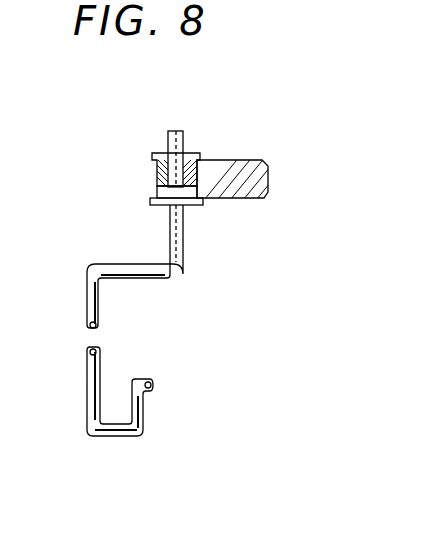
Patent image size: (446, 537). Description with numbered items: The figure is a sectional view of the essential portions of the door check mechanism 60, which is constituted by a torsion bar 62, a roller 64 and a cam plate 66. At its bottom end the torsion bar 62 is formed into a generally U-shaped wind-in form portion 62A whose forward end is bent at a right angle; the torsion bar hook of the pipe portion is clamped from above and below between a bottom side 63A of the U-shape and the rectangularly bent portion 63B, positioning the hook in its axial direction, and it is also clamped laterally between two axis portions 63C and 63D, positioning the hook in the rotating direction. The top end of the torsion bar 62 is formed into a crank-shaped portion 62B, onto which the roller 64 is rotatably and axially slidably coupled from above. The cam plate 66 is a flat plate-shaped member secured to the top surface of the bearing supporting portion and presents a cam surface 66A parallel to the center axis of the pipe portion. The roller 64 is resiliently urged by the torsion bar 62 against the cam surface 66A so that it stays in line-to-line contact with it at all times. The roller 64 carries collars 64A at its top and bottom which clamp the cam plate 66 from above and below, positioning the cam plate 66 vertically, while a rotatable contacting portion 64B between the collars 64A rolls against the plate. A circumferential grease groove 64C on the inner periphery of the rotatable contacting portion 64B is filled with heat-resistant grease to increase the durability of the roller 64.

The door check mechanism 60 is at (263, 220).
The torsion bar 62 is at (144, 266).
The U-shaped wind-in form portion 62A is at (128, 410).
The crank-shaped portion 62B is at (127, 264).
The bottom side of the U-shape 63A is at (118, 437).
The rectangularly bent portion 63B is at (143, 378).
The axis portion 63C is at (87, 385).
The axis portion 63D is at (145, 398).
The roller 64 is at (160, 209).
The collars 64A is at (163, 206).
The rotatable contacting portion 64B is at (155, 191).
The circumferential grease groove 64C is at (155, 178).
The cam plate 66 is at (246, 178).
The cam surface 66A is at (196, 161).